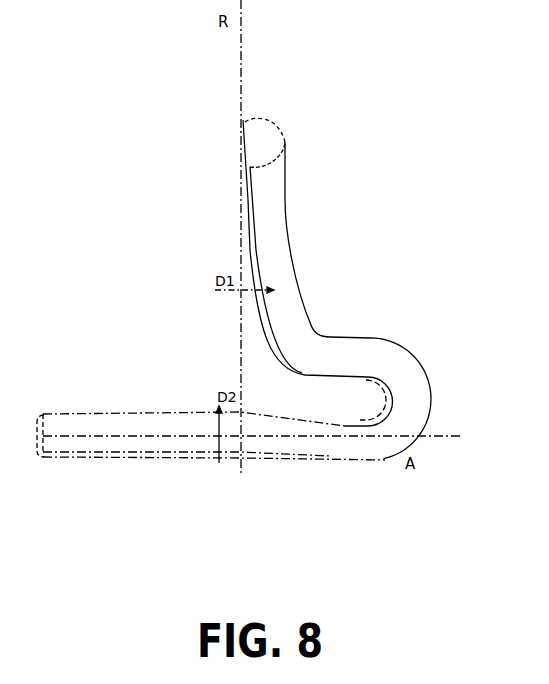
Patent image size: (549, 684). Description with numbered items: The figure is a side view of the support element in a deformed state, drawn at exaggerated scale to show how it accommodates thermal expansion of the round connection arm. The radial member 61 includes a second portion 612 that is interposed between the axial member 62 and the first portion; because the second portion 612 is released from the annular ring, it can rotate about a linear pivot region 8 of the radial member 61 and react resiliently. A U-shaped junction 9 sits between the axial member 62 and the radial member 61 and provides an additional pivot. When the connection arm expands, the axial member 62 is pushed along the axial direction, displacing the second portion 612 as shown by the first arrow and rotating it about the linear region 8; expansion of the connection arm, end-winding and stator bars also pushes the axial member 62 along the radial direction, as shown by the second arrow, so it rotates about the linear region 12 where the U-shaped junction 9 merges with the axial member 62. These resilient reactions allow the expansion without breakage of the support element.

The radial member 61 is at (303, 136).
The linear pivot region 8 is at (243, 182).
The second portion 612 is at (290, 268).
The U-shaped junction 9 is at (438, 380).
The region 12 is at (372, 442).
The axial member 62 is at (126, 418).